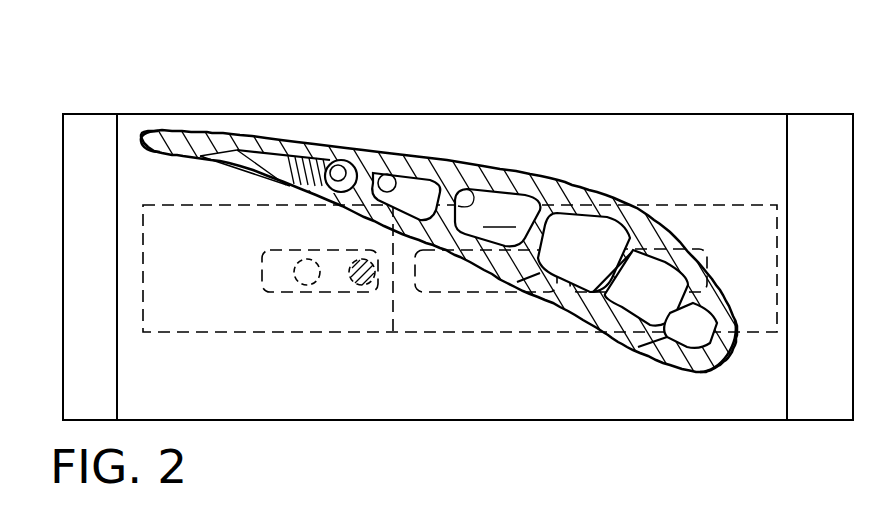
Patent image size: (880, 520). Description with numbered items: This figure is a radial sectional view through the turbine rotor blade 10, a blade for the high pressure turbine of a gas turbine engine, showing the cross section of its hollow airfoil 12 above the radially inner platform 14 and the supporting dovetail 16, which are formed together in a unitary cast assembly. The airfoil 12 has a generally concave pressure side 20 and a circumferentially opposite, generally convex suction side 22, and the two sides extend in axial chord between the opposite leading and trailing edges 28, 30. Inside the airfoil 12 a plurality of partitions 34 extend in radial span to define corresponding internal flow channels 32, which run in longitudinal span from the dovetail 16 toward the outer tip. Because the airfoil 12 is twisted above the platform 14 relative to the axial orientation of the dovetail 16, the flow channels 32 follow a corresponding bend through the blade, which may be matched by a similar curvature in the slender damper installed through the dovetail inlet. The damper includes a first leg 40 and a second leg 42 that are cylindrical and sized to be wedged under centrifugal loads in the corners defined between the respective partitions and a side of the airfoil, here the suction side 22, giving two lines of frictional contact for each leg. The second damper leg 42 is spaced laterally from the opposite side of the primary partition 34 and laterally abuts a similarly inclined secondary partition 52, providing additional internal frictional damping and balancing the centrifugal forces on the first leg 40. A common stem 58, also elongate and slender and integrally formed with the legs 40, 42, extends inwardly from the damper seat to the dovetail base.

The turbine rotor blade 10 is at (460, 217).
The hollow airfoil 12 is at (186, 129).
The radially inner platform 14 is at (680, 114).
The supporting dovetail 16 is at (460, 297).
The pressure side 20 is at (555, 290).
The suction side 22 is at (560, 182).
The leading edge 28 is at (720, 368).
The trailing edge 30 is at (147, 139).
The internal flow channels 32 is at (497, 217).
The partitions 34 is at (471, 197).
The first damper leg 40 is at (388, 174).
The second damper leg 42 is at (341, 160).
The secondary partition 52 is at (290, 183).
The stem 58 is at (375, 250).